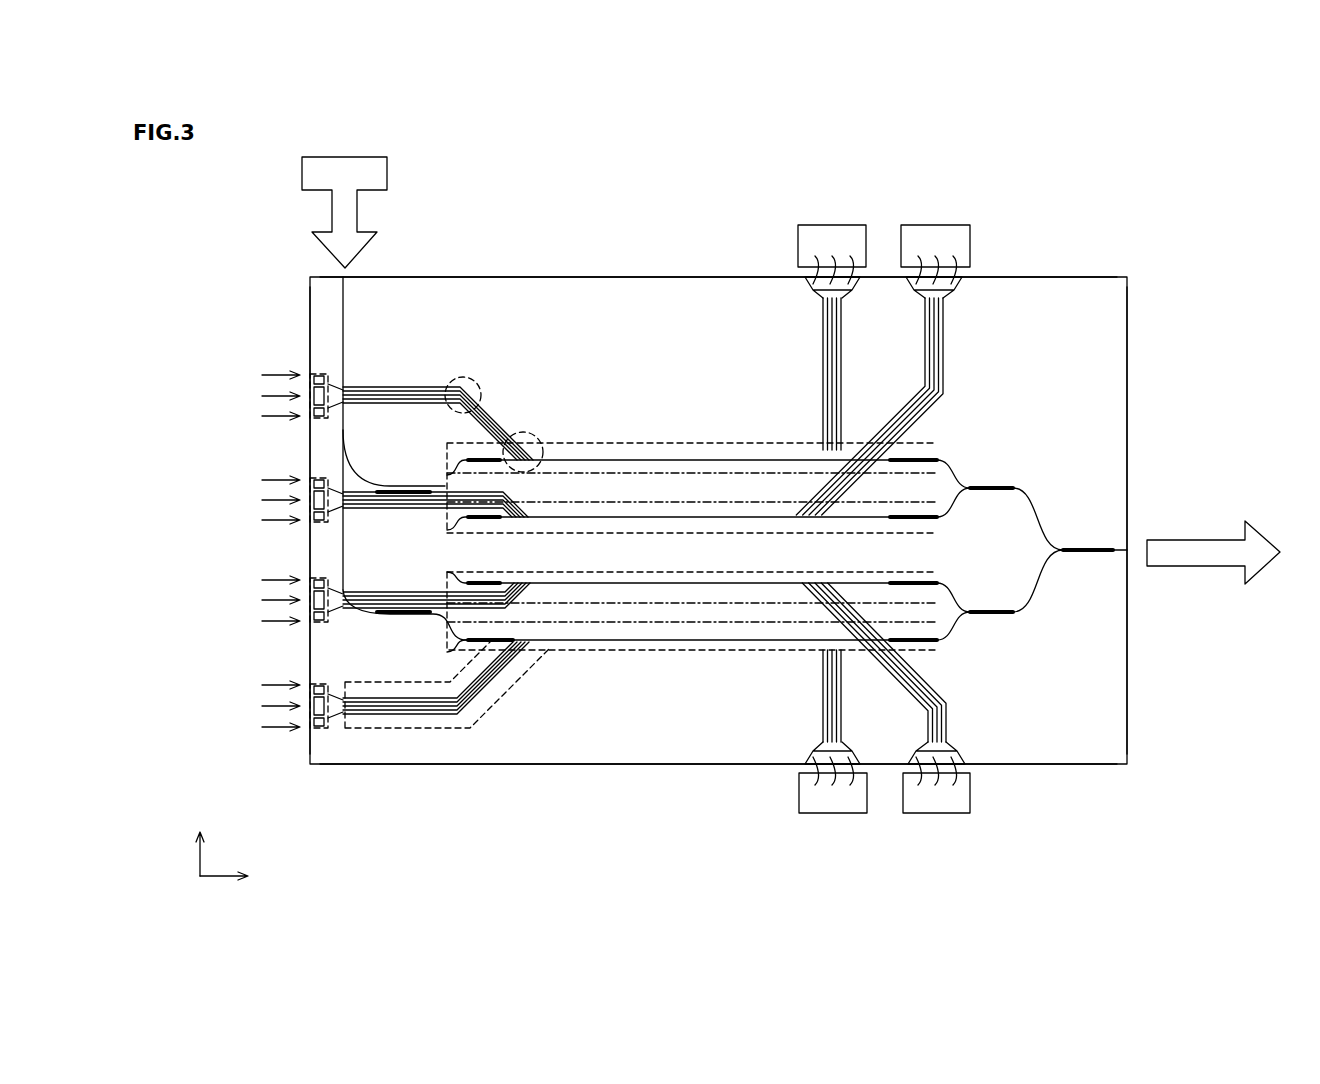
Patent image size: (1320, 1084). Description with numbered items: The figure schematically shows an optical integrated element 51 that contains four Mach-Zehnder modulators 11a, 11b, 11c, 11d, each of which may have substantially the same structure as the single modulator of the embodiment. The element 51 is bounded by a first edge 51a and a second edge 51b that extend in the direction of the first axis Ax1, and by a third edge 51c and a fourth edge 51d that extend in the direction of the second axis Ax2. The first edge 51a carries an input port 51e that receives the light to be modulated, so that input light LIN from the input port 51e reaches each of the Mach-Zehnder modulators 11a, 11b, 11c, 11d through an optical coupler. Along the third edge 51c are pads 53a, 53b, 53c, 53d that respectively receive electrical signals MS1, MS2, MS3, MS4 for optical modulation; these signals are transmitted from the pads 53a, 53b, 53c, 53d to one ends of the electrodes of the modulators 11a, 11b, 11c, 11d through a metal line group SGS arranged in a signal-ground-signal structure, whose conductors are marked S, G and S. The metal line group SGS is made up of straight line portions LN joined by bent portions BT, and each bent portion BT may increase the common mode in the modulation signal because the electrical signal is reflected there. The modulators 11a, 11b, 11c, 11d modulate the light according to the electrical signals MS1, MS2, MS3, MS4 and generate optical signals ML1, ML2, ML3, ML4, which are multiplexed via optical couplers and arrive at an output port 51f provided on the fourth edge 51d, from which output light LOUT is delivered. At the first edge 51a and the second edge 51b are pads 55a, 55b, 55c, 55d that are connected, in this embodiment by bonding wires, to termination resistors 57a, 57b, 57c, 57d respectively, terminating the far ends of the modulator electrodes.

The optical integrated element 51 is at (1128, 331).
The first edge 51a is at (612, 276).
The second edge 51b is at (637, 765).
The third edge 51c is at (309, 299).
The fourth edge 51d is at (1128, 731).
The input port 51e is at (350, 271).
The output port 51f is at (1125, 553).
The pad 53a is at (312, 372).
The pad 53b is at (312, 477).
The pad 53c is at (312, 577).
The pad 53d is at (312, 683).
The pad 55a is at (805, 289).
The pad 55b is at (962, 289).
The pad 55c is at (960, 749).
The pad 55d is at (800, 749).
The termination resistor 57a is at (830, 224).
The termination resistor 57b is at (932, 224).
The termination resistor 57c is at (935, 818).
The termination resistor 57d is at (833, 818).
The Mach-Zehnder modulator 11a is at (955, 433).
The Mach-Zehnder modulator 11b is at (885, 494).
The Mach-Zehnder modulator 11c is at (853, 571).
The Mach-Zehnder modulator 11d is at (925, 676).
The electrical signal MS1 is at (377, 377).
The electrical signal MS2 is at (377, 476).
The electrical signal MS3 is at (377, 580).
The electrical signal MS4 is at (377, 692).
The optical signal ML1 is at (960, 455).
The optical signal ML2 is at (960, 519).
The optical signal ML3 is at (958, 579).
The optical signal ML4 is at (960, 646).
The input light LIN is at (362, 213).
The output light LOUT is at (1177, 538).
The straight line portion LN is at (445, 387).
The bent portion BT is at (482, 379).
The metal line group SGS is at (515, 681).
The signal line S is at (271, 552).
The ground line G is at (271, 552).
The first axis Ax1 is at (247, 877).
The second axis Ax2 is at (195, 838).